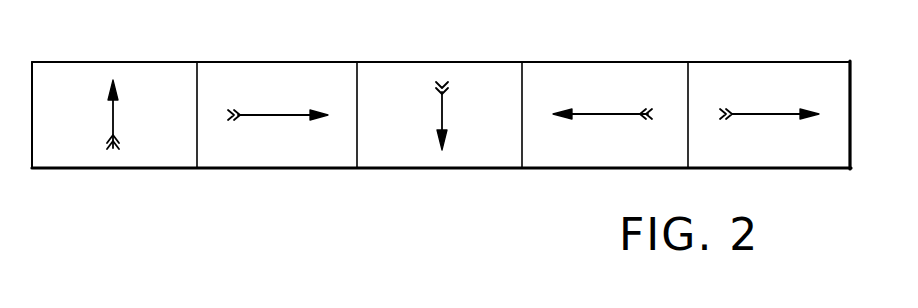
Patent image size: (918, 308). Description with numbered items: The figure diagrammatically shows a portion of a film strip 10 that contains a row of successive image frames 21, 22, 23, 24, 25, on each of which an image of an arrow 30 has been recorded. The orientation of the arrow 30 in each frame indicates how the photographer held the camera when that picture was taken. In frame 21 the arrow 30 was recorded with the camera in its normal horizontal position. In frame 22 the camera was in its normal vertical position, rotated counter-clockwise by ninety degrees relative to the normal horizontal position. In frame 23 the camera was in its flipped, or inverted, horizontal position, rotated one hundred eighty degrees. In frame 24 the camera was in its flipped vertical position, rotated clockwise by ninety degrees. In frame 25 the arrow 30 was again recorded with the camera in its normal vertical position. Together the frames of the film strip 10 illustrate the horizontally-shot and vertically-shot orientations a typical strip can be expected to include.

The film strip 10 is at (152, 55).
The image frame 21 is at (67, 152).
The image frame 22 is at (233, 153).
The image frame 23 is at (397, 153).
The image frame 24 is at (558, 153).
The image frame 25 is at (832, 152).
The arrow 30 is at (115, 118).